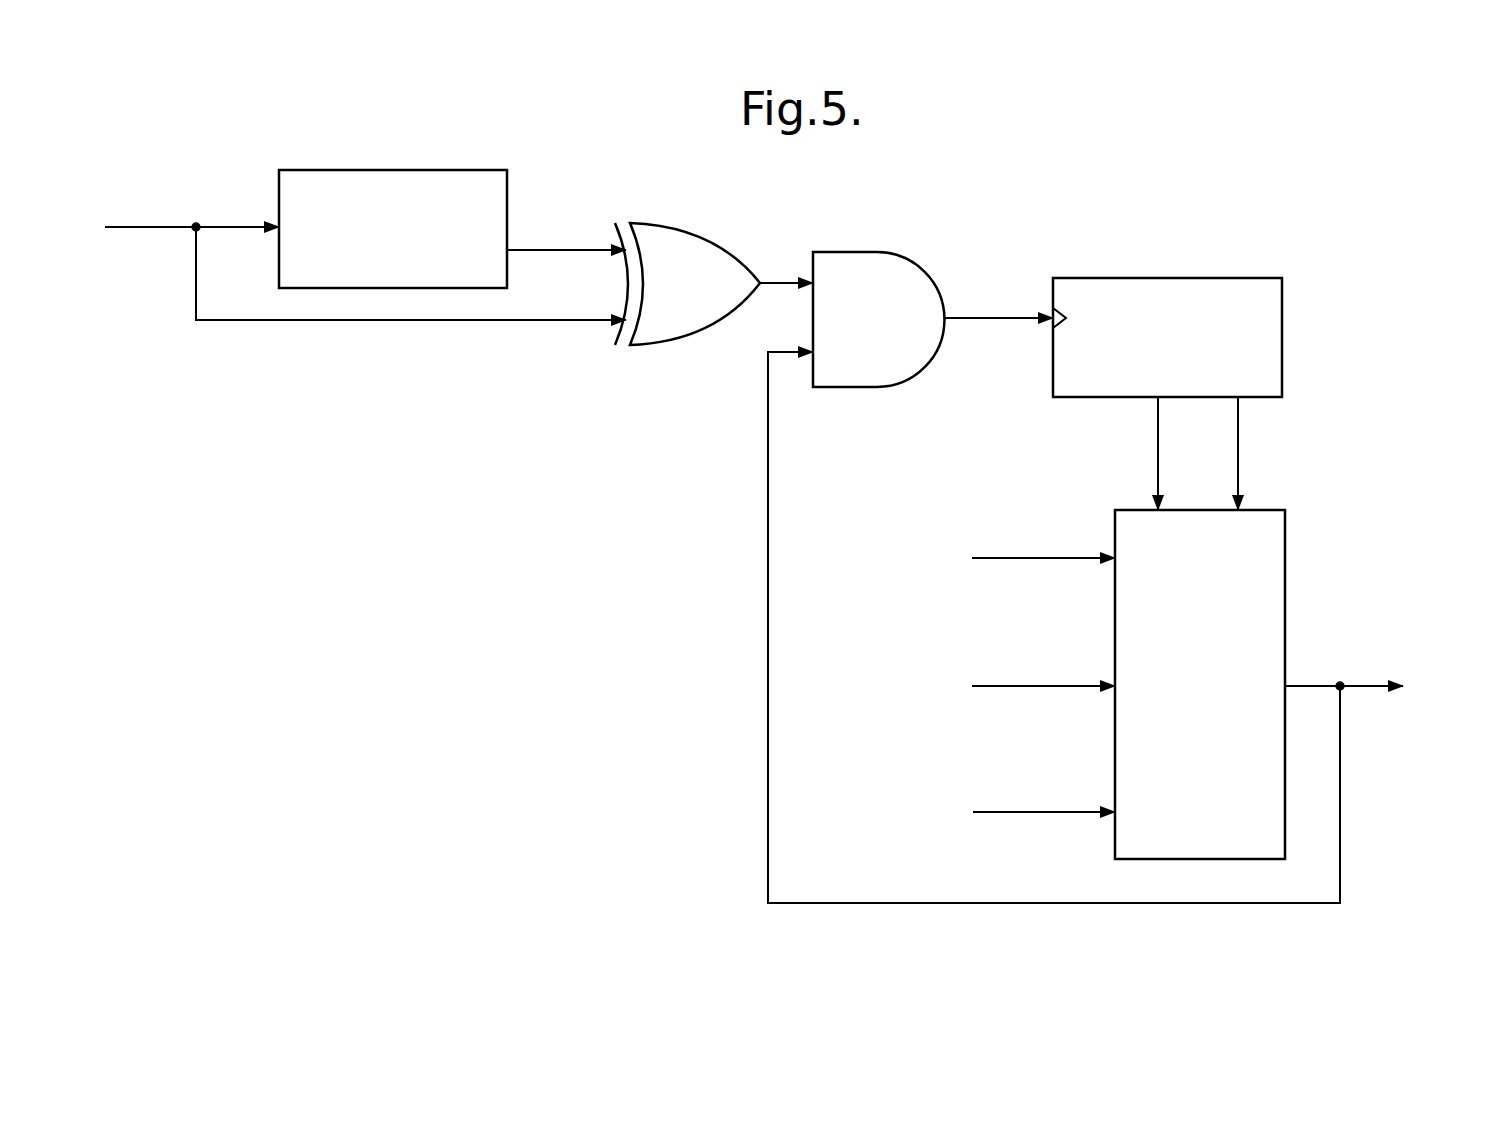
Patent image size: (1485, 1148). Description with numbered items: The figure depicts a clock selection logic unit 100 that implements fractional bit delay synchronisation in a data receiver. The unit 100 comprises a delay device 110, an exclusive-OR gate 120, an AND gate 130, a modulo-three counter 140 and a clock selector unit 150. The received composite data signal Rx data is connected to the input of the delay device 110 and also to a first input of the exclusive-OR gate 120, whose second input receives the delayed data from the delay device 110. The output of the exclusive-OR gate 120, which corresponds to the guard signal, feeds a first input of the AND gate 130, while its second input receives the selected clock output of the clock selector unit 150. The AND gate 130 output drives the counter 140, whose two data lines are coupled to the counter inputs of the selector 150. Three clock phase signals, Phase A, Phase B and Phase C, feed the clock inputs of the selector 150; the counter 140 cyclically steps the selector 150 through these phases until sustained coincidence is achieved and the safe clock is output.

The clock selection logic unit 100 is at (1134, 178).
The delay device 110 is at (393, 229).
The exclusive-OR gate 120 is at (718, 240).
The AND gate 130 is at (913, 265).
The modulo-3 counter 140 is at (1167, 337).
The clock selector unit 150 is at (1200, 684).